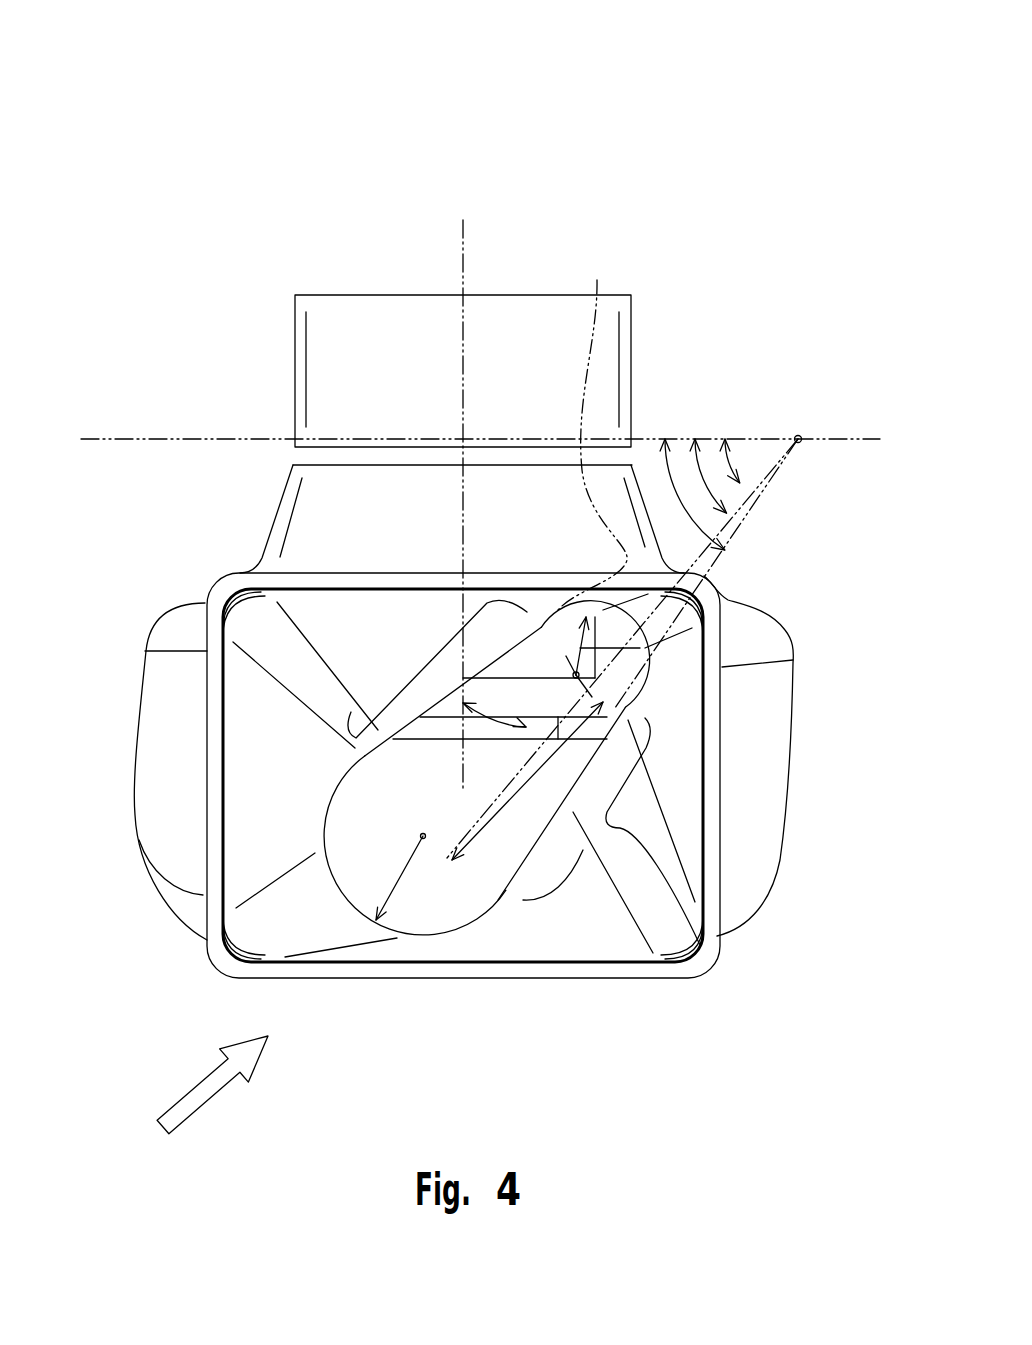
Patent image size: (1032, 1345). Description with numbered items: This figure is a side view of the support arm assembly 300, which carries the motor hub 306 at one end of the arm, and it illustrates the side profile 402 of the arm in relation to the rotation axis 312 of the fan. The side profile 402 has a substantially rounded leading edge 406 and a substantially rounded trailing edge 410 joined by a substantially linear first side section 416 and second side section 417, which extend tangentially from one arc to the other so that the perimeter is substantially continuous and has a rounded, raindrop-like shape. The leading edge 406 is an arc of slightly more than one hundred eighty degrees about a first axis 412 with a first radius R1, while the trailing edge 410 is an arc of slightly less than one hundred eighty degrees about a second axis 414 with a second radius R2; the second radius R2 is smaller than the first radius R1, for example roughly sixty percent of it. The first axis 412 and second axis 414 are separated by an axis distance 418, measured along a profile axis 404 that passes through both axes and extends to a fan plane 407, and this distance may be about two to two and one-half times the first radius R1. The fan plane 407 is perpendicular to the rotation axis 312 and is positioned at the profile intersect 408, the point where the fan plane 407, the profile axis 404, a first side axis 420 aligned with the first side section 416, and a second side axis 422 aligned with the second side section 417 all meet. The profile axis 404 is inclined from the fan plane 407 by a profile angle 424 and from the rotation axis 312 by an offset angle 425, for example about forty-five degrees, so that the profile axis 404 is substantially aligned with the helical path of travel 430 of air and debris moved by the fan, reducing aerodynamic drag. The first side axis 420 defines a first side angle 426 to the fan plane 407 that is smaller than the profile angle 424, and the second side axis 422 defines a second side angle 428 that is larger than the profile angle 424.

The support arm assembly 300 is at (232, 160).
The motor hub 306 is at (125, 693).
The rotation axis 312 is at (463, 250).
The side profile 402 is at (593, 765).
The profile axis 404 is at (742, 532).
The leading edge 406 is at (446, 935).
The fan plane 407 is at (130, 439).
The profile intersect 408 is at (802, 442).
The trailing edge 410 is at (617, 637).
The first axis 412 is at (448, 870).
The second axis 414 is at (628, 660).
The first side section 416 is at (440, 652).
The second side section 417 is at (700, 945).
The axis distance 418 is at (488, 805).
The first side axis 420 is at (592, 429).
The second side axis 422 is at (770, 483).
The profile angle 424 is at (726, 470).
The offset angle 425 is at (497, 723).
The first side angle 426 is at (730, 472).
The second side angle 428 is at (665, 475).
The path of travel 430 is at (200, 1093).
The first radius R1 is at (423, 840).
The second radius R2 is at (600, 678).